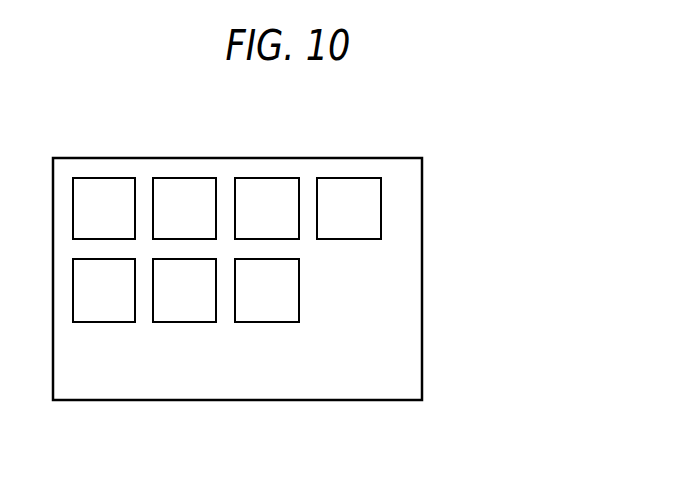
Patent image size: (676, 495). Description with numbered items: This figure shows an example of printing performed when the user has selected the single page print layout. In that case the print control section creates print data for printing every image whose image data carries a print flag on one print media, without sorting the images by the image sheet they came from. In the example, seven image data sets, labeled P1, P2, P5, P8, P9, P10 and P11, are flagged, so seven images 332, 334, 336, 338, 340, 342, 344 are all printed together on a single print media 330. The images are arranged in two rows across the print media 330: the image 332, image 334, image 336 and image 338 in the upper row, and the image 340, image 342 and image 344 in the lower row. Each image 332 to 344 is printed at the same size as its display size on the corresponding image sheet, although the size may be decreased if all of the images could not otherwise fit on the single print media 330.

The print media 330 is at (422, 201).
The image 332 is at (105, 178).
The image 334 is at (185, 178).
The image 336 is at (267, 178).
The image 338 is at (348, 178).
The image 340 is at (105, 322).
The image 342 is at (185, 322).
The image 344 is at (267, 322).